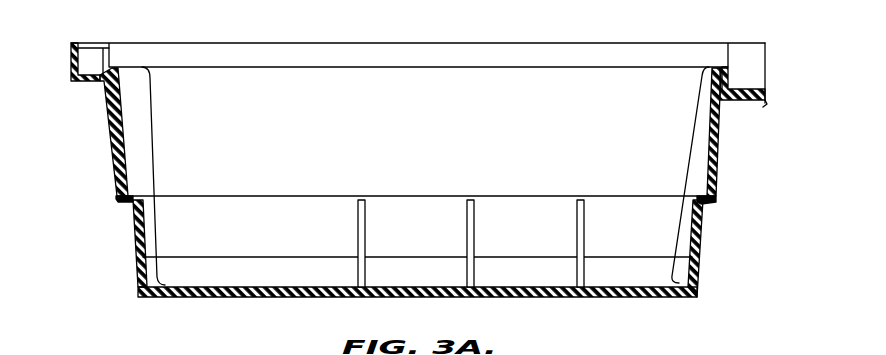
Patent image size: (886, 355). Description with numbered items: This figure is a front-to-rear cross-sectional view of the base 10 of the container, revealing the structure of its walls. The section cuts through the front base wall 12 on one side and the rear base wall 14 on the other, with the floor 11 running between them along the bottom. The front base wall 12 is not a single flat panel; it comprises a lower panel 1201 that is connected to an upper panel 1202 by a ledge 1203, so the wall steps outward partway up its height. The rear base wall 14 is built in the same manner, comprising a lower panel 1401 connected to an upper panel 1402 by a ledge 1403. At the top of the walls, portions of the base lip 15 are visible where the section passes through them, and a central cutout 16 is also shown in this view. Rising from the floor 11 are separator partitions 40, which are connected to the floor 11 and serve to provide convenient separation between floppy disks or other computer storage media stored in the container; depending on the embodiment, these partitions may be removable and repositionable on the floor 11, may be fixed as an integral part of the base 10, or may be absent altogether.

The base 10 is at (84, 33).
The floor 11 is at (251, 297).
The front base wall 12 is at (686, 152).
The rear base wall 14 is at (156, 166).
The base lip 15 is at (70, 80).
The central cutout 16 is at (732, 80).
The separator partitions 40 is at (366, 214).
The lower panel 1201 is at (700, 243).
The upper panel 1202 is at (718, 152).
The ledge 1203 is at (707, 203).
The lower panel 1401 is at (135, 266).
The upper panel 1402 is at (113, 135).
The ledge 1403 is at (125, 201).